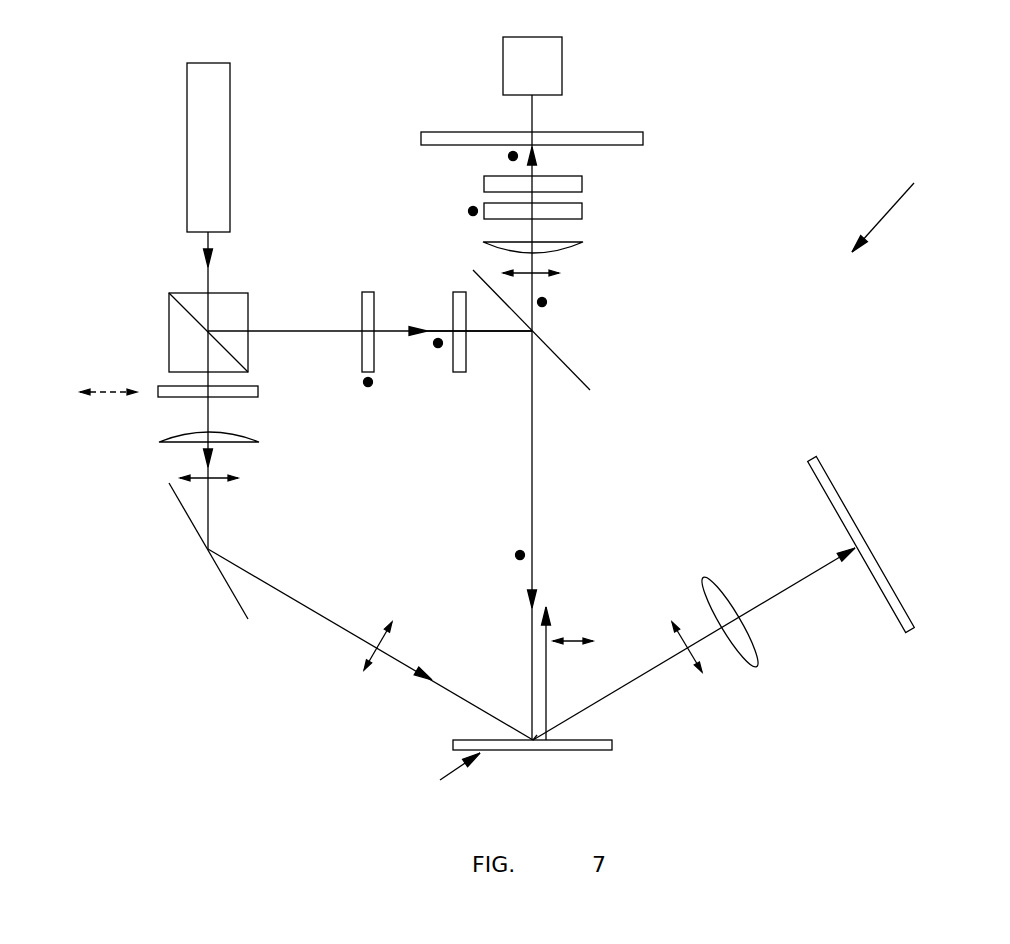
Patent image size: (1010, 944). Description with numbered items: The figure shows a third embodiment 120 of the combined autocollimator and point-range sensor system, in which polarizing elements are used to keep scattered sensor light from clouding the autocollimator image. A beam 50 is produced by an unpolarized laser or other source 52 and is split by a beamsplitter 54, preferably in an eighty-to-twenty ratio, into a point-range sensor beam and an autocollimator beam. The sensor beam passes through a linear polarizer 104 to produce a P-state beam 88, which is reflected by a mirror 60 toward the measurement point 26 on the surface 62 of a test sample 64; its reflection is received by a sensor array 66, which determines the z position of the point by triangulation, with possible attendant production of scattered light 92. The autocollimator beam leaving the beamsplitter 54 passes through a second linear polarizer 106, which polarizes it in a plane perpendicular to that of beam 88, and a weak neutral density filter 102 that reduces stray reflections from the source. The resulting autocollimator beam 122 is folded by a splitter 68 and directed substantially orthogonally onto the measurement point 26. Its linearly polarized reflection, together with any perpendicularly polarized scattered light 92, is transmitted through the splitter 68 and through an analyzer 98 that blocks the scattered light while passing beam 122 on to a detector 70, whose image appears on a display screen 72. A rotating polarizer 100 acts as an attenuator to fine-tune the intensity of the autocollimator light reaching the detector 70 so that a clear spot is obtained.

The light source 52 is at (232, 108).
The beam 50 is at (210, 241).
The beamsplitter 54 is at (169, 331).
The linear polarizer 104 is at (258, 392).
The P-state beam 88 is at (212, 416).
The mirror 60 is at (187, 517).
The surface 62 is at (598, 738).
The test sample 64 is at (431, 784).
The measurement point 26 is at (537, 735).
The scattered light 92 is at (547, 630).
The sensor array 66 is at (840, 490).
The splitter 68 is at (575, 368).
The autocollimator beam 122 is at (488, 333).
The neutral density filter 102 is at (458, 372).
The linear polarizer 106 is at (368, 292).
The rotating polarizer 100 is at (484, 182).
The analyzer 98 is at (582, 215).
The detector 70 is at (610, 145).
The display screen 72 is at (562, 63).
The third embodiment 120 is at (900, 207).